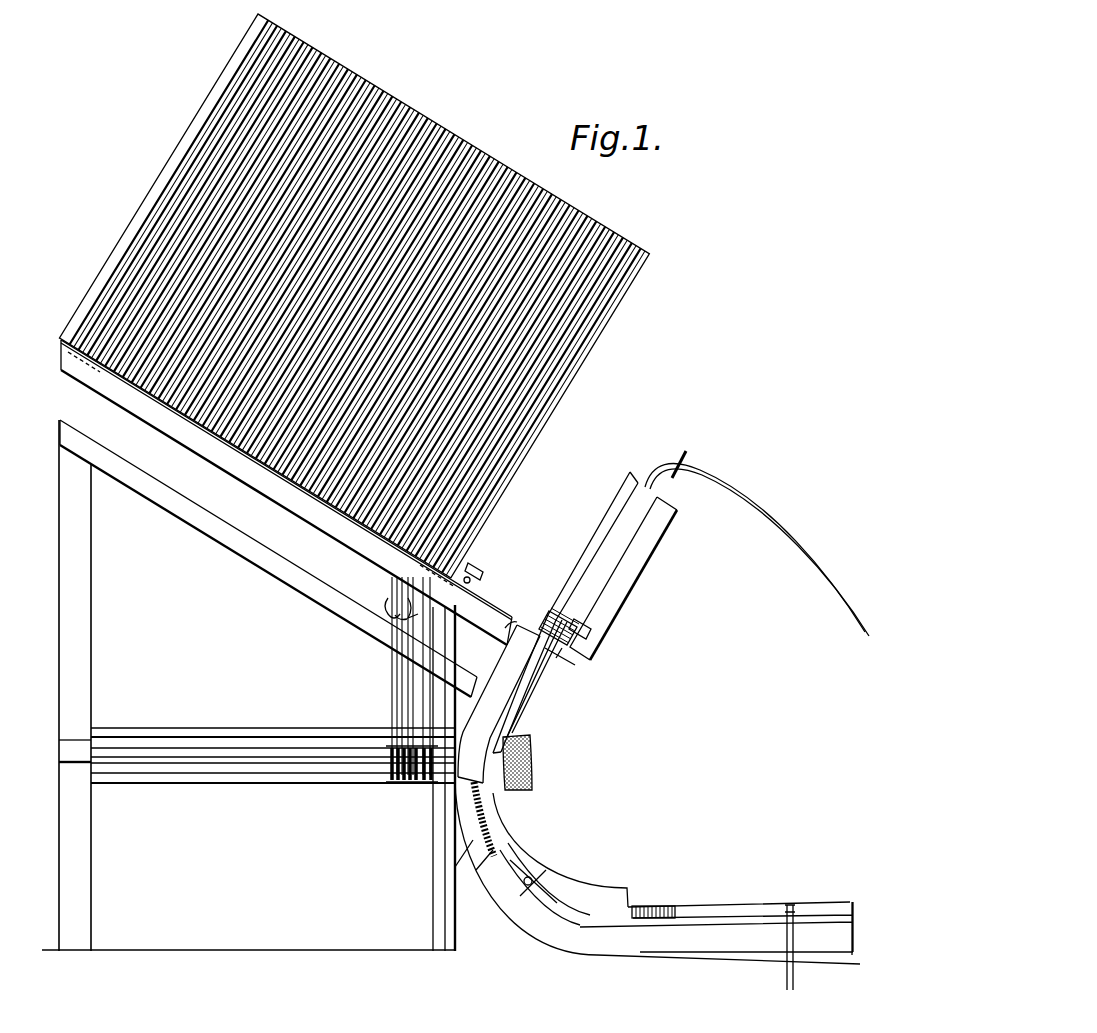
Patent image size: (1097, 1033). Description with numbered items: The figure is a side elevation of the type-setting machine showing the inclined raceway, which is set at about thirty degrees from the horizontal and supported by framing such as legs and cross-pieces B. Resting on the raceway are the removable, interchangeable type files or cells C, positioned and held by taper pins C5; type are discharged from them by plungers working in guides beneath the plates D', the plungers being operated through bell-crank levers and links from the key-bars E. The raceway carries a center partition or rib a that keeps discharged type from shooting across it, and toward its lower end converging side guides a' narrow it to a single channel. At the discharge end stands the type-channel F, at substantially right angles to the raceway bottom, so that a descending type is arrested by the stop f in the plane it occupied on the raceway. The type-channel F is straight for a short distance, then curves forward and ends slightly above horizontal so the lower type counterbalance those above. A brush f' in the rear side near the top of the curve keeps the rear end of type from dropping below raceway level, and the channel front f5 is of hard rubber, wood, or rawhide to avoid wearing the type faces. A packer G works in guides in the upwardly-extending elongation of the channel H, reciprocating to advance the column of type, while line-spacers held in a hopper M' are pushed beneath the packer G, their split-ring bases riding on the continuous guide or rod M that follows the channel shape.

The type files or cells C is at (354, 296).
The taper pins C5 is at (286, 492).
The plates D' is at (268, 558).
The legs and cross-pieces B is at (440, 828).
The center partition or rib a is at (441, 603).
The side guides a' is at (397, 676).
The key-bars E is at (400, 776).
The type-channel F is at (530, 717).
The stop f is at (575, 657).
The front of the type-channel f5 is at (527, 763).
The brush f' is at (474, 837).
The hopper M' is at (565, 612).
The upwardly-extending projection or elongation of the channel H is at (643, 557).
The guide or rod M is at (757, 549).
The packer G is at (593, 631).